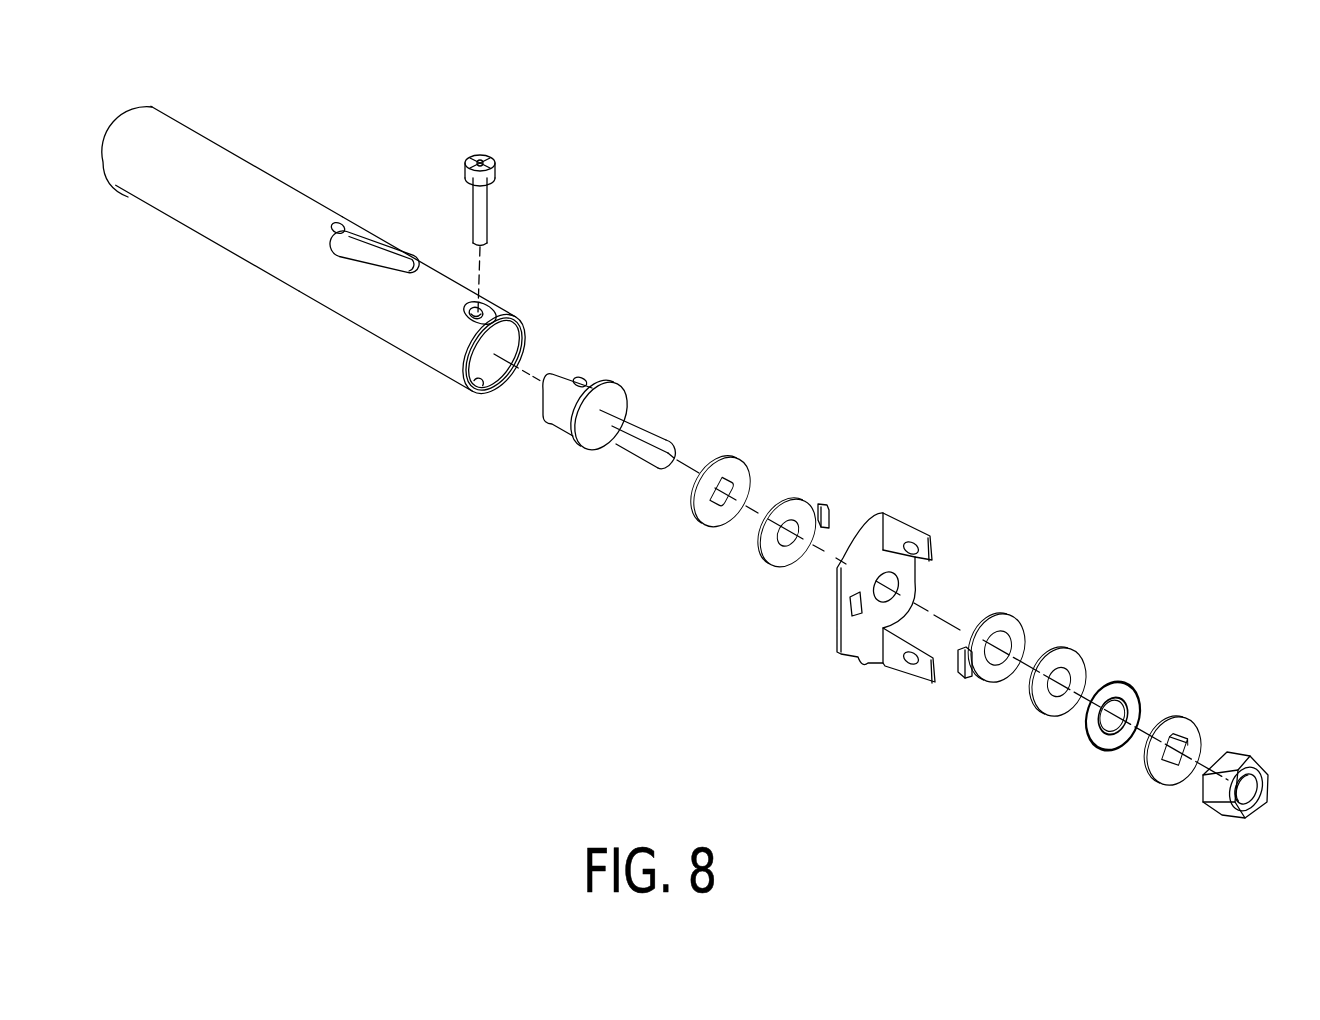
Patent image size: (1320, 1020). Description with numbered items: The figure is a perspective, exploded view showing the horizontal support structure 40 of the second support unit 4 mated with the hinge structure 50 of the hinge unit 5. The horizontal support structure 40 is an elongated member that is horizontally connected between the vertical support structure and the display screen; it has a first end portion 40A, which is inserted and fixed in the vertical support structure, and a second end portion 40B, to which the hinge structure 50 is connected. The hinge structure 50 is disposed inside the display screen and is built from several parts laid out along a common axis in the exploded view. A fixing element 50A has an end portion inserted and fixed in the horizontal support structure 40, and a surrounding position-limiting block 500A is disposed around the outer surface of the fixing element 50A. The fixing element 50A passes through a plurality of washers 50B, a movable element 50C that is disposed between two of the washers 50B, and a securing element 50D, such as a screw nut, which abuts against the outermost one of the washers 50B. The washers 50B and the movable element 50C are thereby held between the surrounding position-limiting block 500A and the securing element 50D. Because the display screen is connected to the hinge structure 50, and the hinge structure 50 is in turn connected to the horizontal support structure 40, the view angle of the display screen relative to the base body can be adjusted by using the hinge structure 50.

The second support unit 4 is at (325, 122).
The horizontal support structure 40 is at (299, 222).
The first end portion 40A is at (167, 130).
The second end portion 40B is at (447, 357).
The hinge unit 5 is at (984, 91).
The hinge structure 50 is at (1048, 38).
The fixing element 50A is at (600, 380).
The surrounding position-limiting block 500A is at (622, 402).
The washers 50B is at (855, 500).
The movable element 50C is at (875, 533).
The securing element 50D is at (1245, 762).